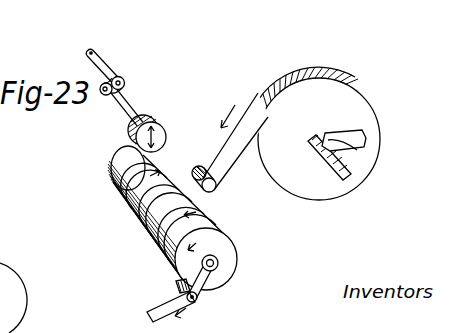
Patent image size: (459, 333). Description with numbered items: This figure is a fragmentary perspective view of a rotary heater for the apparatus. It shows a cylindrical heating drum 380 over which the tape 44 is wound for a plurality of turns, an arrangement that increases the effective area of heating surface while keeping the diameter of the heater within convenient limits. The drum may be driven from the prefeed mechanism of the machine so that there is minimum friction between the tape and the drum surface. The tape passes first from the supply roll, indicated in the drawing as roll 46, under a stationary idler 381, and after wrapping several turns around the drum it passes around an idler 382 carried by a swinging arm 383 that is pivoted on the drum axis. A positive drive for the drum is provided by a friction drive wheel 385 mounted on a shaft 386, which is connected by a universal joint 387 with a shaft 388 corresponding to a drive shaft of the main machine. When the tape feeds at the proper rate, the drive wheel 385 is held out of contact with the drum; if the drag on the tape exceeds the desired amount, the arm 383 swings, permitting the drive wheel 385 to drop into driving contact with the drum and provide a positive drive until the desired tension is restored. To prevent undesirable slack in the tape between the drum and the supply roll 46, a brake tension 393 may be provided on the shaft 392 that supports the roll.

The tape 44 is at (222, 165).
The pulley wheel 46 is at (355, 107).
The cylindrical heating drum 380 is at (223, 258).
The stationary idler 381 is at (198, 166).
The idler 382 is at (177, 282).
The swinging arm 383 is at (202, 280).
The friction drive wheel 385 is at (130, 132).
The shaft 386 is at (132, 100).
The universal joint 387 is at (113, 72).
The shaft 388 is at (92, 51).
The shaft 392 is at (350, 180).
The brake tension 393 is at (358, 154).